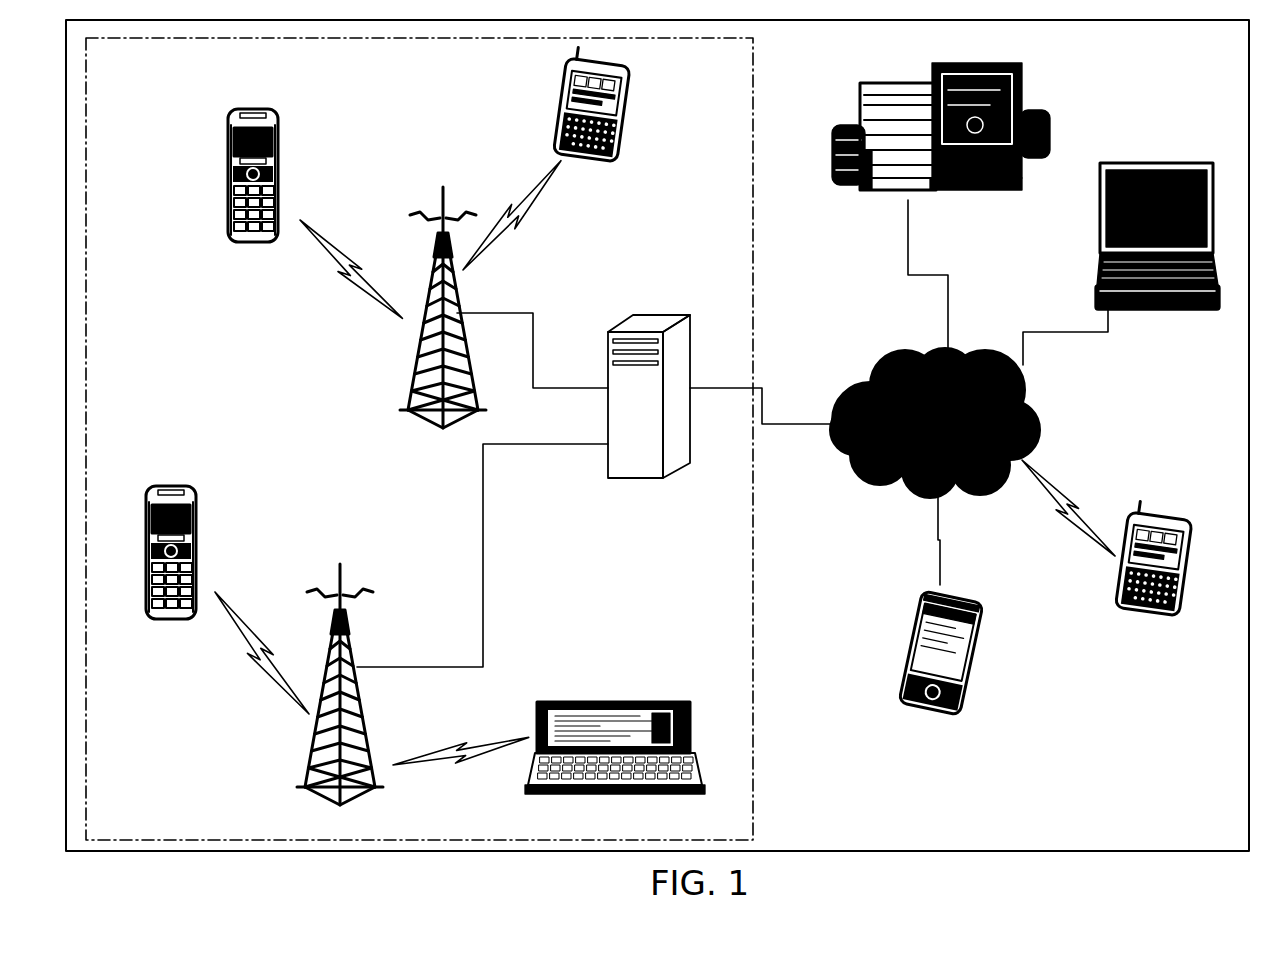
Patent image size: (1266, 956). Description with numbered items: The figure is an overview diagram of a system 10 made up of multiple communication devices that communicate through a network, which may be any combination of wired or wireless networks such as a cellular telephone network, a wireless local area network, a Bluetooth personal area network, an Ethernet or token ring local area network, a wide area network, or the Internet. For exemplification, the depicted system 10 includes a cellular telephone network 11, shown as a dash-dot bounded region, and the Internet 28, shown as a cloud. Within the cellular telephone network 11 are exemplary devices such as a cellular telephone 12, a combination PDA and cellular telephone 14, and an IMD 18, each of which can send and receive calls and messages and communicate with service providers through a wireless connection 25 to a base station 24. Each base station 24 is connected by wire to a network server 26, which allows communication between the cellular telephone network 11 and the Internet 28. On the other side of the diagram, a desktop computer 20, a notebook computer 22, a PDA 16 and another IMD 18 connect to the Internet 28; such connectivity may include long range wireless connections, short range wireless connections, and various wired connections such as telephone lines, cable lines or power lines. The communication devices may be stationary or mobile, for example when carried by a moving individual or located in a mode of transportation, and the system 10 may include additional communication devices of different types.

The system 10 is at (1212, 834).
The cellular telephone network 11 is at (158, 84).
The cellular telephone 12 is at (217, 174).
The combination PDA and cellular telephone 14 is at (622, 693).
The PDA 16 is at (989, 671).
The IMD 18 is at (636, 129).
The desktop computer 20 is at (842, 99).
The notebook computer 22 is at (1176, 324).
The base station 24 is at (396, 392).
The wireless connection 25 is at (246, 608).
The network server 26 is at (693, 478).
The Internet 28 is at (986, 430).